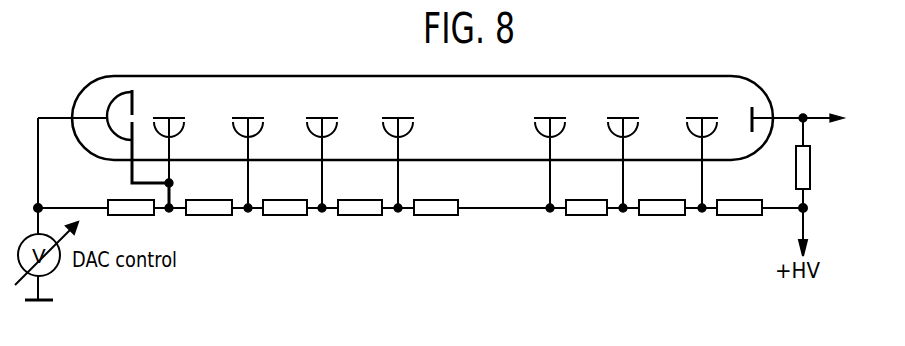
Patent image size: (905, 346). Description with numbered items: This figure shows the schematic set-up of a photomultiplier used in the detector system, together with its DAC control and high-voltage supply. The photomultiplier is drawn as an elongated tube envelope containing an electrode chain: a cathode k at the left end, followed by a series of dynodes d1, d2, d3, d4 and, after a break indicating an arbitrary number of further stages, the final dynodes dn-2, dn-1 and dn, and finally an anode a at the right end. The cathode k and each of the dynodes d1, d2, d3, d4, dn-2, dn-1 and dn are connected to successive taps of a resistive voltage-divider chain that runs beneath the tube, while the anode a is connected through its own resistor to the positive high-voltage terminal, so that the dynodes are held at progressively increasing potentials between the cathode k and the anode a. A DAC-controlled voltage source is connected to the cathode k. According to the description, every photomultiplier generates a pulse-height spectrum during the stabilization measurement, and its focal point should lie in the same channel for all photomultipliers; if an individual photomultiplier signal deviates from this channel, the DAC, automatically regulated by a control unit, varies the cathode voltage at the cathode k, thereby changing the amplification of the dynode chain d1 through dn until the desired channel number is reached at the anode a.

The cathode k is at (105, 149).
The first dynode d1 is at (169, 150).
The second dynode d2 is at (248, 150).
The third dynode d3 is at (322, 150).
The fourth dynode d4 is at (398, 150).
The dynode n-2 dn-2 is at (549, 151).
The dynode n-1 dn-1 is at (624, 151).
The last dynode dn is at (702, 151).
The anode a is at (798, 112).